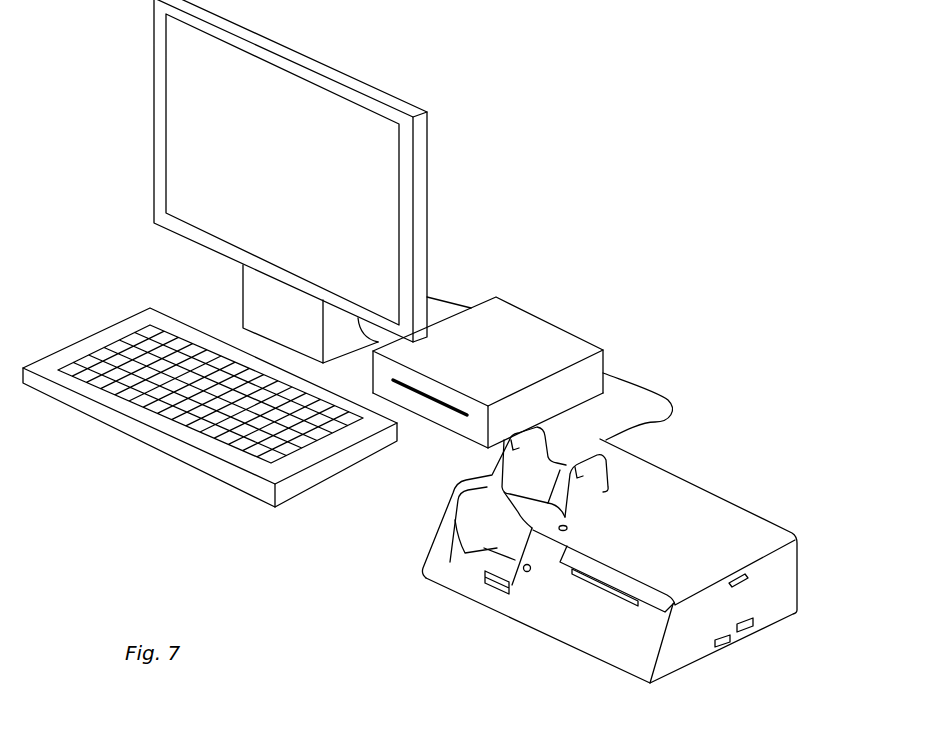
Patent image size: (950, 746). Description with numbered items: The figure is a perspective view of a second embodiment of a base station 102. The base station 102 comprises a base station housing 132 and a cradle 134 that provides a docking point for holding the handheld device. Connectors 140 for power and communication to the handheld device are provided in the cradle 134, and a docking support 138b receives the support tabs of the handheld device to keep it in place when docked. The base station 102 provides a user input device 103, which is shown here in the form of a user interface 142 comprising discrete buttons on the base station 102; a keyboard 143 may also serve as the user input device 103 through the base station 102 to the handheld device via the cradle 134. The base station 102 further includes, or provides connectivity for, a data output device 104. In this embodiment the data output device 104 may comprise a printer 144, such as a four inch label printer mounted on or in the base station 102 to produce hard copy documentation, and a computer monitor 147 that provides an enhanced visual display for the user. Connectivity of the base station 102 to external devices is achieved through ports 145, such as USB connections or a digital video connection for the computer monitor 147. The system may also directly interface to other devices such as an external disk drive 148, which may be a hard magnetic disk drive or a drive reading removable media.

The base station 102 is at (648, 480).
The user input device 103 is at (197, 460).
The data output device 104 is at (198, 140).
The base station housing 132 is at (603, 629).
The cradle 134 is at (498, 517).
The docking support 138b is at (566, 520).
The connectors 140 is at (482, 578).
The user interface 142 is at (525, 574).
The keyboard 143 is at (113, 419).
The printer 144 is at (748, 543).
The ports 145 is at (752, 633).
The computer monitor 147 is at (310, 183).
The external disk drive 148 is at (516, 362).